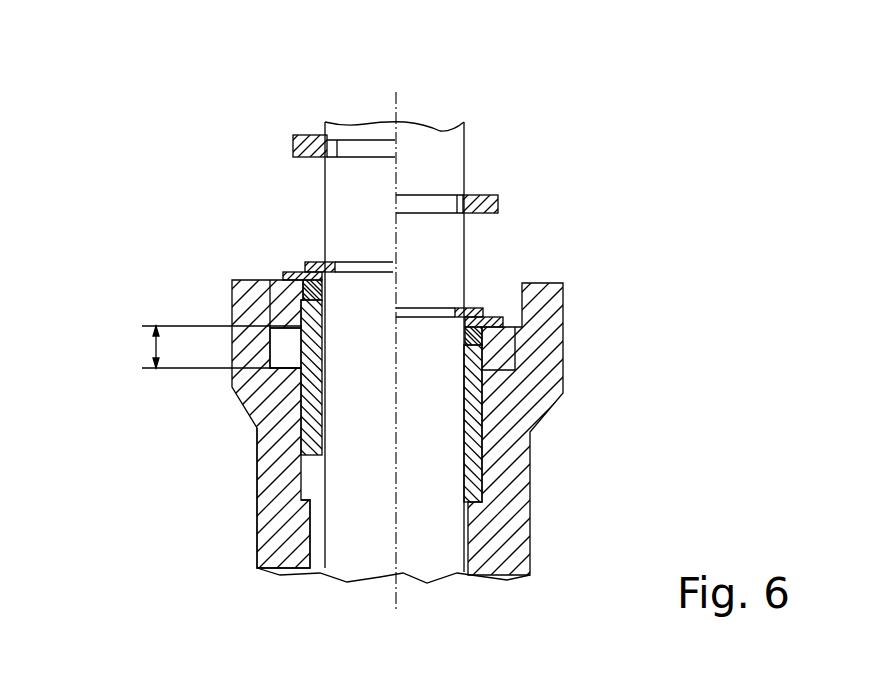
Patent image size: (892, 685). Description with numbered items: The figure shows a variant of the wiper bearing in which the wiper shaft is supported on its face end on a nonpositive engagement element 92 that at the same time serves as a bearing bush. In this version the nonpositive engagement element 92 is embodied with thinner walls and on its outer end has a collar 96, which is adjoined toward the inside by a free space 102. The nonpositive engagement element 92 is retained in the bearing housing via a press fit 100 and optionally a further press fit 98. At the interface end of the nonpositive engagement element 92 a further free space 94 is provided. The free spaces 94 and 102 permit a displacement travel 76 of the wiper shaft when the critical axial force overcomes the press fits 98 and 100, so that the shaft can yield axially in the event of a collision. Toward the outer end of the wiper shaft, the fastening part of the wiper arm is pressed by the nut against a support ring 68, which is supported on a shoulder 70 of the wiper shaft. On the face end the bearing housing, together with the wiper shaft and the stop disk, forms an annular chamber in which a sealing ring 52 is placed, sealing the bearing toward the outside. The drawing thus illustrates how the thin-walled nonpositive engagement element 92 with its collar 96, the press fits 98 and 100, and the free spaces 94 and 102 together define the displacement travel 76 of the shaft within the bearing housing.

The support ring 68 is at (295, 135).
The shoulder 70 is at (372, 155).
The press fit 98 is at (270, 302).
The displacement travel 76 is at (155, 342).
The free space 102 is at (175, 379).
The press fit 100 is at (298, 420).
The free space 94 is at (272, 502).
The collar 96 is at (500, 332).
The sealing ring 52 is at (482, 341).
The nonpositive engagement element 92 is at (472, 403).